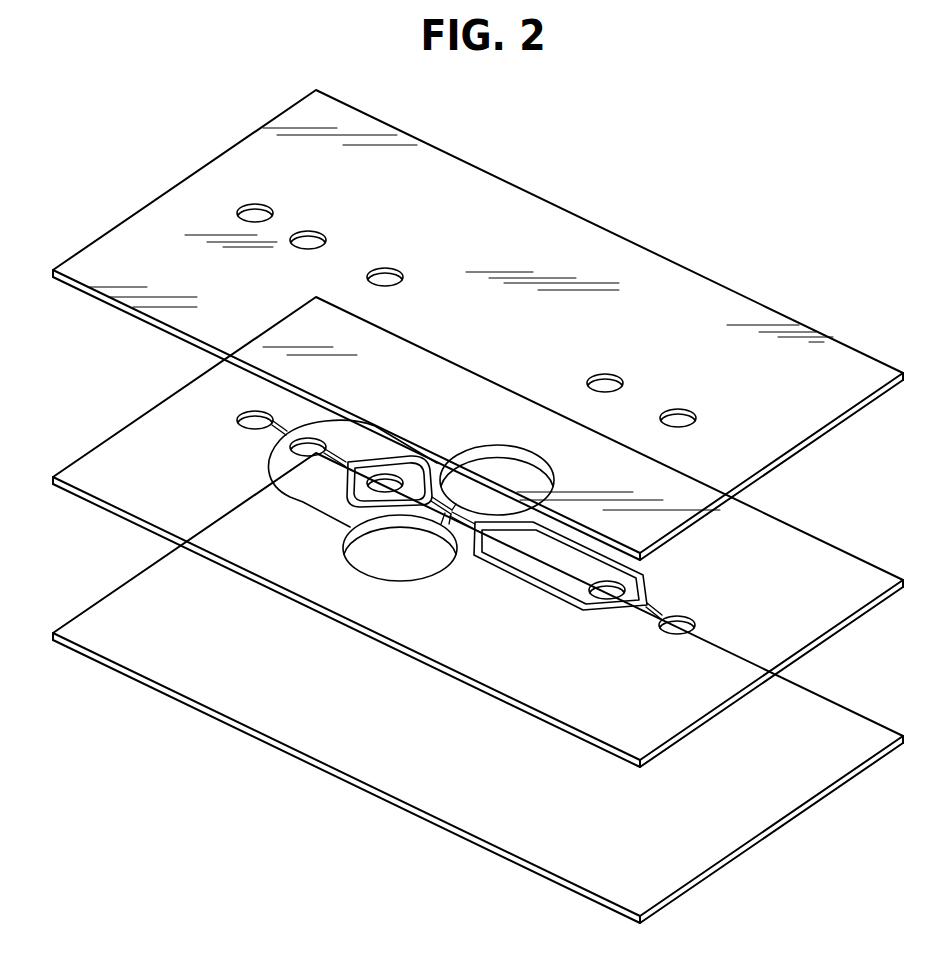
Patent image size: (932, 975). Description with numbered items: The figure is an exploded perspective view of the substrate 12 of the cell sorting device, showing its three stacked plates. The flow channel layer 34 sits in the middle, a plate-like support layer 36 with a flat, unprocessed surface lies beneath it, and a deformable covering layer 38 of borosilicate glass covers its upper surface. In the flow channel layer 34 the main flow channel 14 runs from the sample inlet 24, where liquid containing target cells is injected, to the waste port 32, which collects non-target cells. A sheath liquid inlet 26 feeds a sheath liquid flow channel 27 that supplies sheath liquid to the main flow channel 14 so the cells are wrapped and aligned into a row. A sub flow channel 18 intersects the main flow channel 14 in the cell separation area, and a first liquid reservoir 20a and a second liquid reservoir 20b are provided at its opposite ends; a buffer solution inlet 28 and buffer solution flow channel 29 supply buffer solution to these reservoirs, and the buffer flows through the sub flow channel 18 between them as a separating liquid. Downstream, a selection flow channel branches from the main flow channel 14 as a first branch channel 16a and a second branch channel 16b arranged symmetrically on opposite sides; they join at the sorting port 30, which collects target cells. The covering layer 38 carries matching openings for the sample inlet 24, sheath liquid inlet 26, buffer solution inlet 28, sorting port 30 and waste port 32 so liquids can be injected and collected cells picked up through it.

The substrate 12 is at (655, 212).
The main flow channel 14 is at (430, 507).
The first branch channel 16a is at (525, 545).
The second branch channel 16b is at (472, 530).
The sub flow channel 18 is at (447, 520).
The first liquid reservoir 20a is at (546, 468).
The second liquid reservoir 20b is at (385, 553).
The sample inlet 24 is at (385, 275).
The sheath liquid inlet 26 is at (308, 240).
The sheath liquid flow channel 27 is at (333, 452).
The buffer solution inlet 28 is at (255, 212).
The buffer solution flow channel 29 is at (298, 503).
The sorting port 30 is at (679, 417).
The waste port 32 is at (606, 382).
The flow channel layer 34 is at (856, 558).
The support layer 36 is at (856, 715).
The covering layer 38 is at (856, 352).